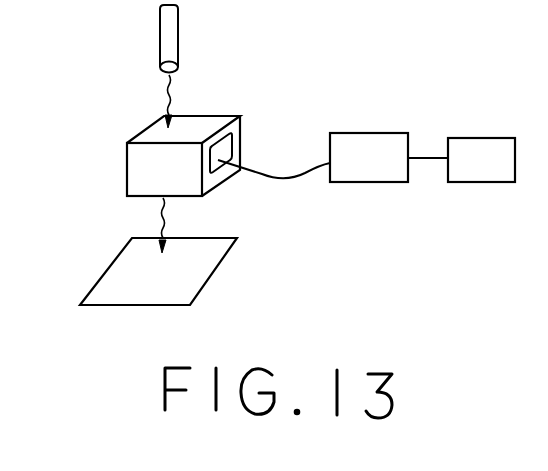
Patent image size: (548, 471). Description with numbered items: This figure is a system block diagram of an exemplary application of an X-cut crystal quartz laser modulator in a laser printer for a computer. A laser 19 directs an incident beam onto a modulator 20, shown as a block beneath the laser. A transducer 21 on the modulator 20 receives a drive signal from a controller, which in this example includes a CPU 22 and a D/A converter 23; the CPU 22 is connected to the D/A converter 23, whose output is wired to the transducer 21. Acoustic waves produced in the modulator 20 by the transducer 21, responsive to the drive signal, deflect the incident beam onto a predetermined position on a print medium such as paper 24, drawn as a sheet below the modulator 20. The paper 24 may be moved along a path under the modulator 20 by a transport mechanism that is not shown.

The laser 19 is at (163, 38).
The modulator 20 is at (137, 170).
The transducer 21 is at (232, 155).
The CPU 22 is at (487, 182).
The D/A converter 23 is at (363, 182).
The paper 24 is at (107, 275).